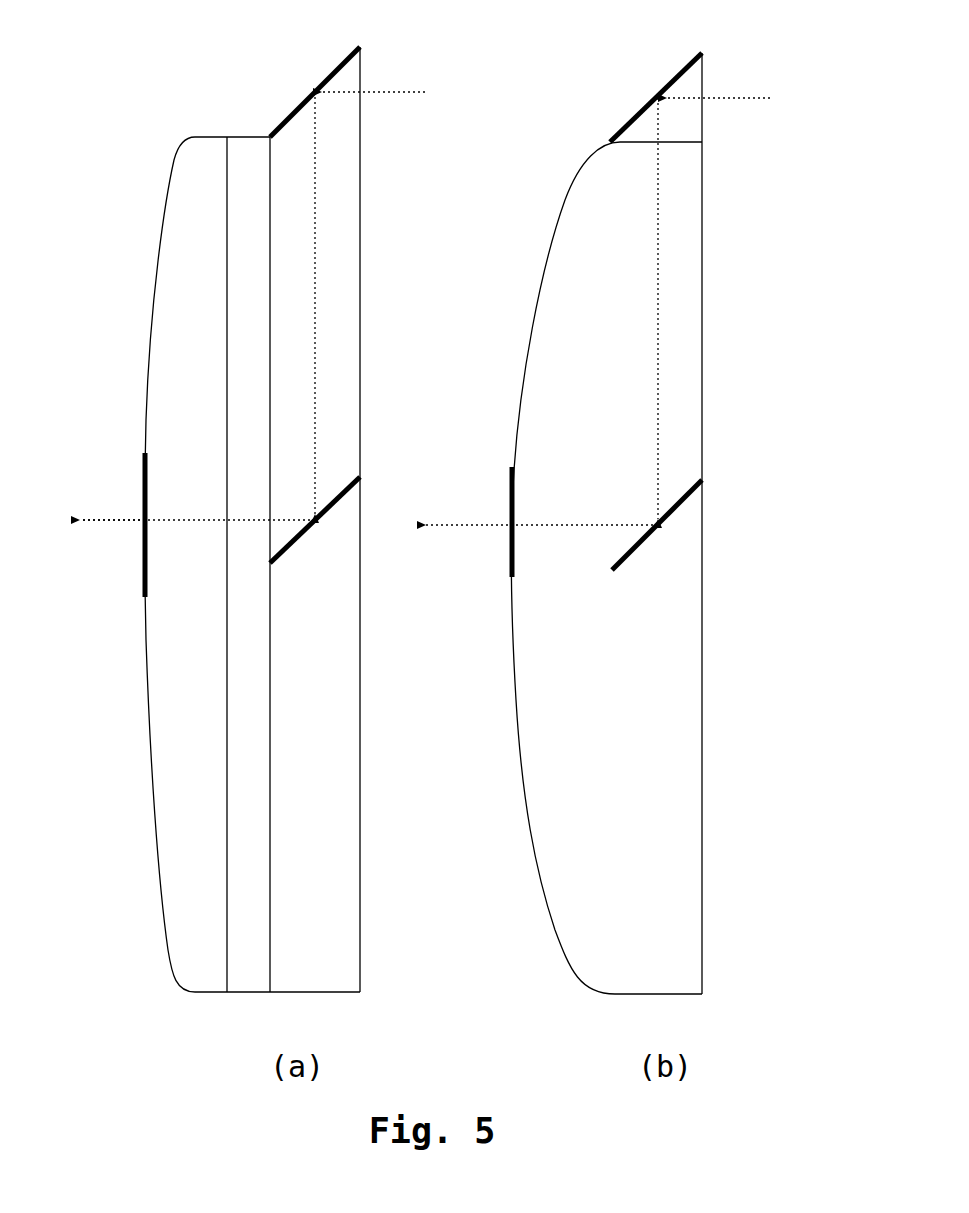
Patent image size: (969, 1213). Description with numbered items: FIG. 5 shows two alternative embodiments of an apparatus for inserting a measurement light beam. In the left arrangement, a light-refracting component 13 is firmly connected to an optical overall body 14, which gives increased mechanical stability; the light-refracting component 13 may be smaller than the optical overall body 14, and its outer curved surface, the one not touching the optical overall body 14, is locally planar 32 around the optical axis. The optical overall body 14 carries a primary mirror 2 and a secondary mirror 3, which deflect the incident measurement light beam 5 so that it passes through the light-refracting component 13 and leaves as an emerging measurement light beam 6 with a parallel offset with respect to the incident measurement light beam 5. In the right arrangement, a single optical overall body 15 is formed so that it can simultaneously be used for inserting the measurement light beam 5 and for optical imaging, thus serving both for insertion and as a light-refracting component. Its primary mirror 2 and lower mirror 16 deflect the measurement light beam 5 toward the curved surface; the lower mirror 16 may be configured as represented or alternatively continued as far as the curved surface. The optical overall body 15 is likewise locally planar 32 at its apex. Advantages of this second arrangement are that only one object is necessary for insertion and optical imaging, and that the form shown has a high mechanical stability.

The primary mirror 2 is at (347, 68).
The secondary mirror 3 is at (330, 505).
The incident measurement light beam 5 is at (418, 92).
The emerging measurement light beam 6 is at (105, 515).
The light-refracting component 13 is at (180, 235).
The optical overall body 14 is at (340, 302).
The optical overall body 15 is at (678, 355).
The lower mirror 16 is at (665, 520).
The locally planar region 32 is at (145, 468).